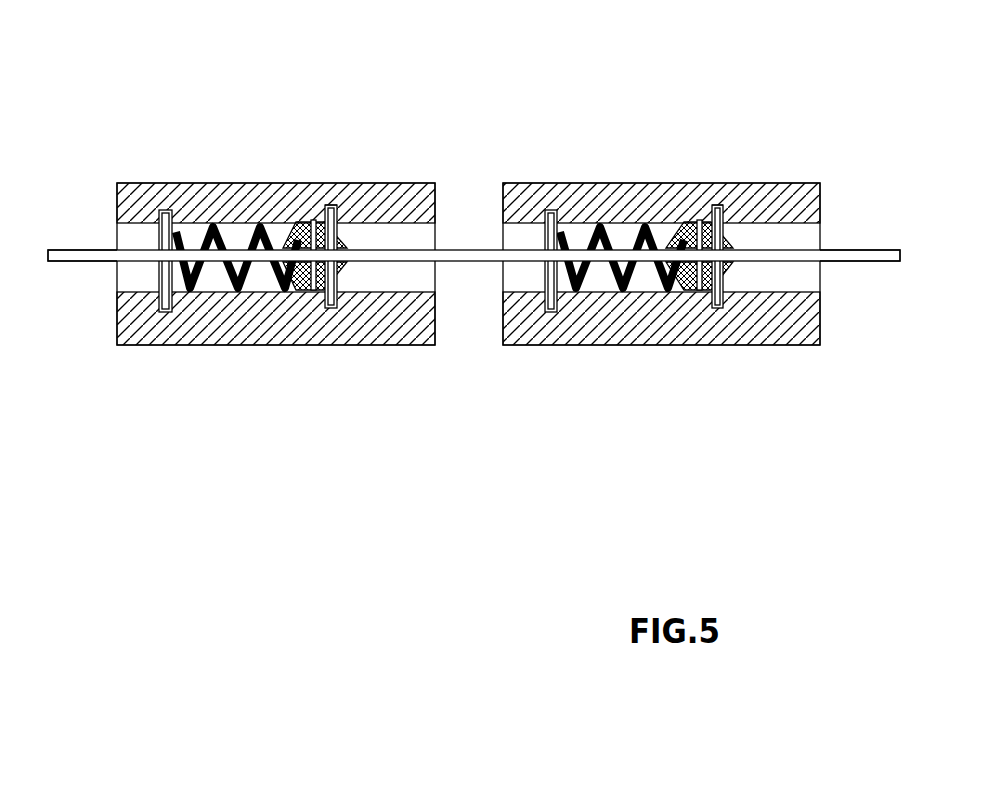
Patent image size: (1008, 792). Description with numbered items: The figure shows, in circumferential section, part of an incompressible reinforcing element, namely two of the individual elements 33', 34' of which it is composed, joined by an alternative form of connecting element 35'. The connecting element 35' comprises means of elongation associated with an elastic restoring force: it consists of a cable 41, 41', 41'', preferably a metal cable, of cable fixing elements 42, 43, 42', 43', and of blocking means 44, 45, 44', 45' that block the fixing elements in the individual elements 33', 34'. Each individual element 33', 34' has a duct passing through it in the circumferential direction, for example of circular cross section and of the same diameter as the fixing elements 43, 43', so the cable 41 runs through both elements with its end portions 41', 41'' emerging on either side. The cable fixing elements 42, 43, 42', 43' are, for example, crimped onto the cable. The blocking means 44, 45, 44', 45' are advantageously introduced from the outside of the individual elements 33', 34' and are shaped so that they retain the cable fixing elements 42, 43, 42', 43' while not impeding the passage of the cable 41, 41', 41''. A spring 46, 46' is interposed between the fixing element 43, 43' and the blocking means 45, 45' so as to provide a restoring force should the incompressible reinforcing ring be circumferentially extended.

The connecting element 35' is at (465, 233).
The individual element 33' is at (247, 304).
The individual element 34' is at (661, 315).
The cable 41 is at (474, 335).
The cable 41' is at (73, 191).
The cable 41'' is at (860, 190).
The cable fixing element 42 is at (307, 320).
The cable fixing element 42' is at (737, 311).
The cable fixing element 43 is at (698, 210).
The cable fixing element 43' is at (315, 193).
The blocking means 44 is at (365, 168).
The blocking means 44' is at (753, 172).
The blocking means 45 is at (549, 326).
The blocking means 45' is at (165, 318).
The spring 46 is at (622, 192).
The spring 46' is at (237, 184).